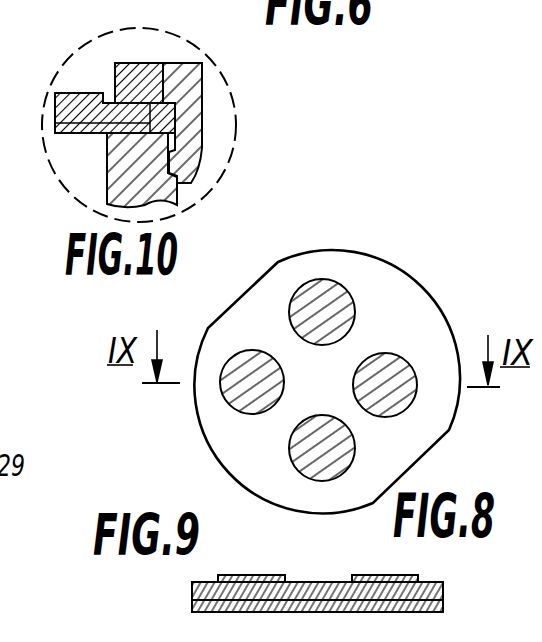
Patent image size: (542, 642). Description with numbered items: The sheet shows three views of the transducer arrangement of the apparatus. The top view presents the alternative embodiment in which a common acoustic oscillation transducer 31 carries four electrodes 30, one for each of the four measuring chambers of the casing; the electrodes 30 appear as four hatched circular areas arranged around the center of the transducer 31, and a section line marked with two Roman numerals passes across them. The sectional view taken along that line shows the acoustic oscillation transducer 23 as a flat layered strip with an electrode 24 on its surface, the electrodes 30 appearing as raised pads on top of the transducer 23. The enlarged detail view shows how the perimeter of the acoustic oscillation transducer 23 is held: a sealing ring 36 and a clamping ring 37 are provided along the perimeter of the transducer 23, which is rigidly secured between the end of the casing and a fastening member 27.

In FIG. 9, the acoustic oscillation transducer 23 is at (299, 583).
In FIG. 9, the electrode 24 is at (332, 602).
In FIG. 10, the fastening member 27 is at (190, 153).
In FIG. 8, the electrode 30 is at (337, 287).
In FIG. 9, the electrode 30 is at (238, 578).
In FIG. 8, the common acoustic oscillation transducer 31 is at (407, 313).
In FIG. 10, the sealing ring 36 is at (178, 127).
In FIG. 10, the clamping ring 37 is at (160, 66).